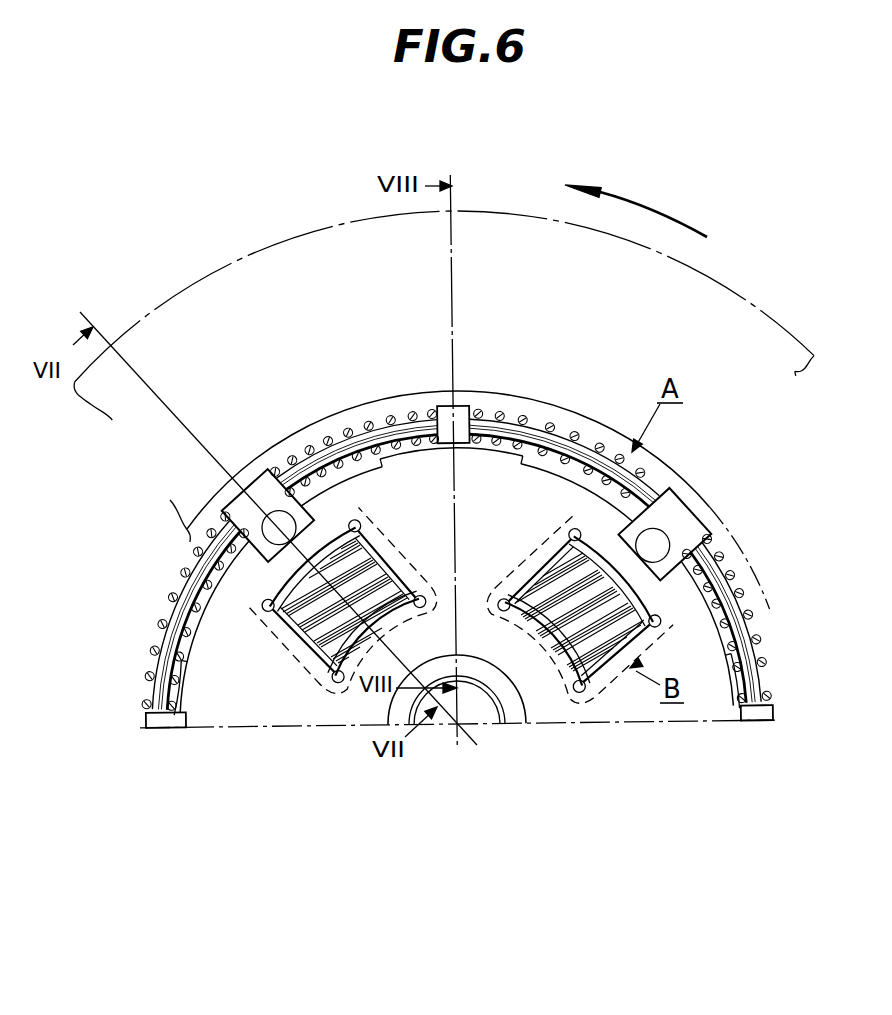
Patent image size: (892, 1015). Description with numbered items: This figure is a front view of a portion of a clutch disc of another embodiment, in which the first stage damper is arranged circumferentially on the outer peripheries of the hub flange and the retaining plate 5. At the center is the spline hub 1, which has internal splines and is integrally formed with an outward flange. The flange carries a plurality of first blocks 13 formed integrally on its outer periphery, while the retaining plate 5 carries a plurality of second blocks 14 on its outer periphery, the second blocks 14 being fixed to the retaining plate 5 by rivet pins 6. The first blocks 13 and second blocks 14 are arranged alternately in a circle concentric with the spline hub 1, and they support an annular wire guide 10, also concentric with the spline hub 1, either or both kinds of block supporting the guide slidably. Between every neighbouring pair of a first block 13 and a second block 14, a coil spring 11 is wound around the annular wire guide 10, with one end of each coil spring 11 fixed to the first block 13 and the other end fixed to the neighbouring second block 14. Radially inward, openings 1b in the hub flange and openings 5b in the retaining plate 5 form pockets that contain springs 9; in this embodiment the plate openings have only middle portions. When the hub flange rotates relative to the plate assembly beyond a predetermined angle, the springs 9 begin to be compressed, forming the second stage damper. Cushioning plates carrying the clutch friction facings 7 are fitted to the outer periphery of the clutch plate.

The spline hub 1 is at (528, 702).
The opening 1b is at (283, 683).
The retaining plate 5 is at (698, 717).
The opening 5b is at (378, 551).
The rivet pin 6 is at (283, 524).
The clutch friction facing 7 is at (753, 303).
The spring 9 is at (376, 563).
The annular wire guide 10 is at (380, 433).
The coil spring 11 is at (548, 426).
The first block 13 is at (460, 420).
The second block 14 is at (264, 487).